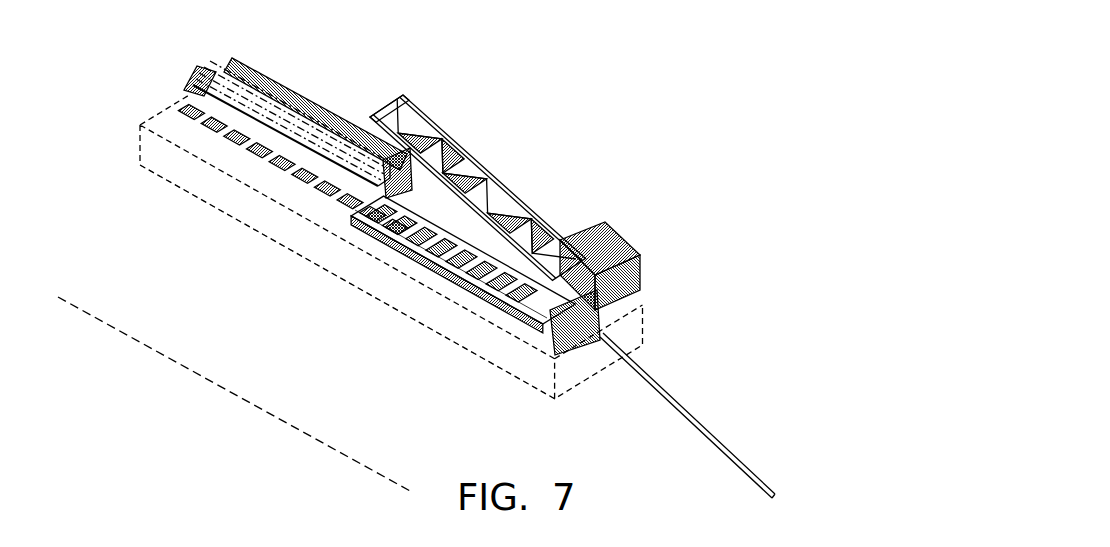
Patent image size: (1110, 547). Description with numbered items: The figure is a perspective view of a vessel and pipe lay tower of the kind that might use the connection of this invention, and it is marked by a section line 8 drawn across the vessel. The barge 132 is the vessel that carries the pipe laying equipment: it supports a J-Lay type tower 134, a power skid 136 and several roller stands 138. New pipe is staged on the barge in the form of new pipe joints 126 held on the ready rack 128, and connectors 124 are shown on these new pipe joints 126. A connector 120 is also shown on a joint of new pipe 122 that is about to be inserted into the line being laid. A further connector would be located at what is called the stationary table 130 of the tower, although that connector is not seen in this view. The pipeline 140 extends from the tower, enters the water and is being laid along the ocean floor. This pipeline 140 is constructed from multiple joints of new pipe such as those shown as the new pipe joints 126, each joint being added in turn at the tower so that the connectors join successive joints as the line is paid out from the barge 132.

The section line 8- 8 is at (58, 297).
The connector 120 is at (377, 233).
The joint of new pipe 122 is at (423, 260).
The connector 124 is at (198, 66).
The new pipe joints 126 is at (253, 90).
The ready rack 128 is at (323, 120).
The stationary table 130 is at (555, 393).
The barge 132 is at (458, 330).
The J-Lay type tower 134 is at (502, 180).
The power skid 136 is at (625, 268).
The roller stands 138 is at (280, 158).
The pipeline 140 is at (698, 417).